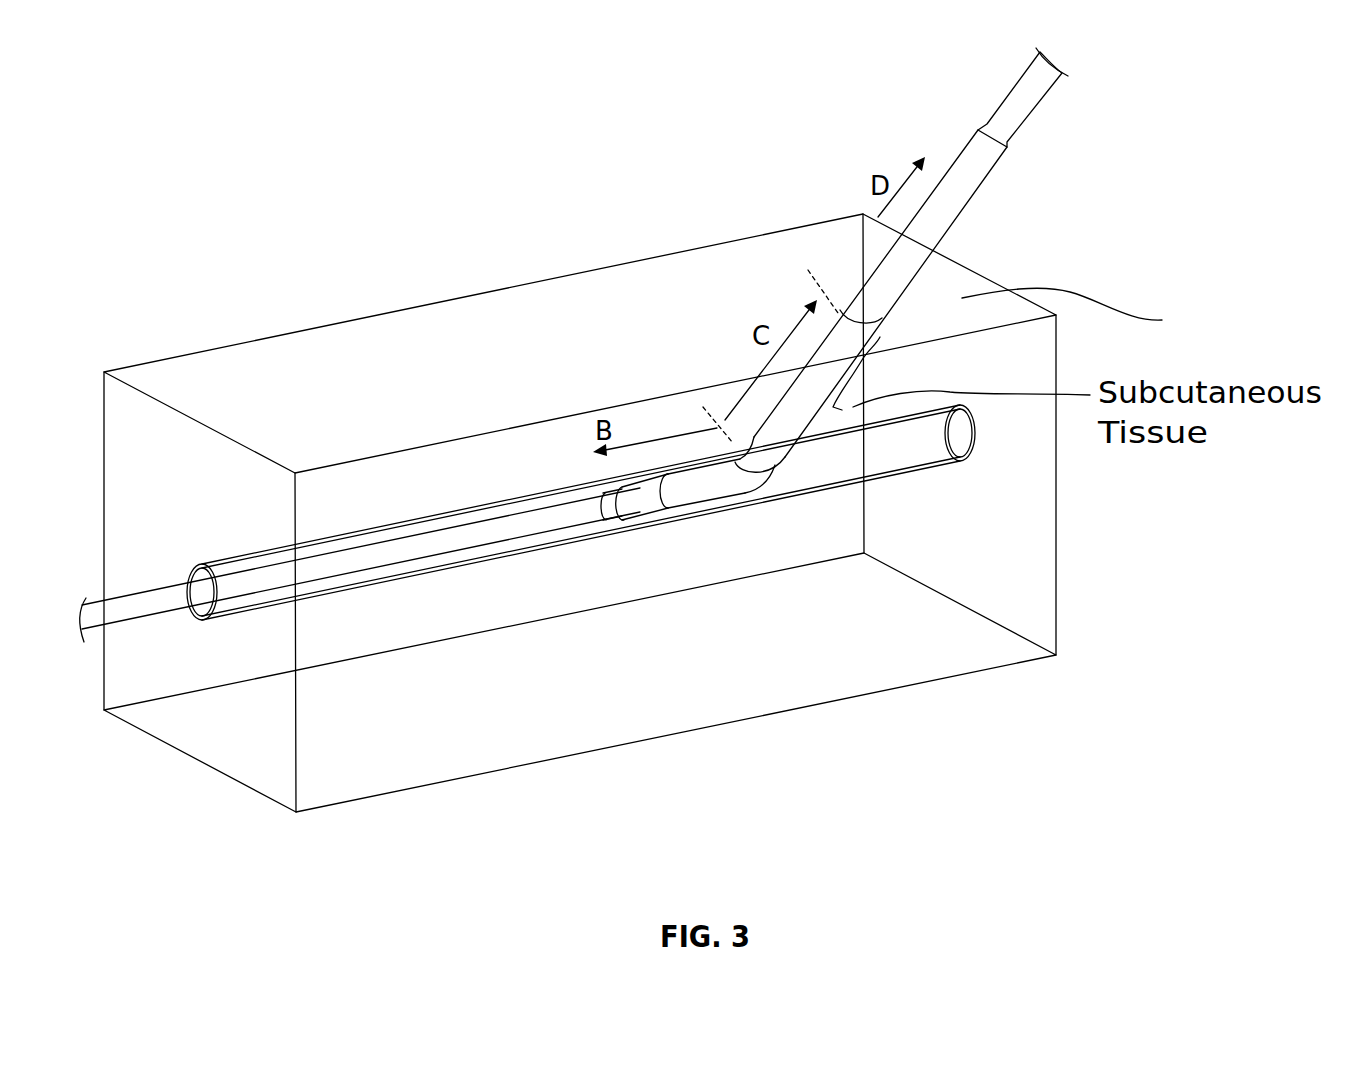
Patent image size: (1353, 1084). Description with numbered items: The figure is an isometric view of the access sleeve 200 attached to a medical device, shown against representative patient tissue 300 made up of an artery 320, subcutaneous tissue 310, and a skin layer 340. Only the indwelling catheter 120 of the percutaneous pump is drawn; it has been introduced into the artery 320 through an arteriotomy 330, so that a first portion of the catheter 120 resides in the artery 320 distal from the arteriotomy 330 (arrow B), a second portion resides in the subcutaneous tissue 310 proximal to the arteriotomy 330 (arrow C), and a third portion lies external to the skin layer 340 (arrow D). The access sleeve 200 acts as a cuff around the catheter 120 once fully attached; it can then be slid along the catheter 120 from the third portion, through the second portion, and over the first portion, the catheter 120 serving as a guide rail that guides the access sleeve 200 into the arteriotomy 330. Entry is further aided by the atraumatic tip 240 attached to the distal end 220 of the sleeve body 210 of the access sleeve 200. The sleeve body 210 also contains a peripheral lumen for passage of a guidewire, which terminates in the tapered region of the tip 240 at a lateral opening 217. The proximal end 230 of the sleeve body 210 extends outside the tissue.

The tissue block / subcutaneous tissue model 300 is at (347, 166).
The subcutaneous tissue 310 is at (378, 358).
The artery 320 is at (340, 530).
The indwelling catheter 120 is at (565, 512).
The sleeve body 210 is at (797, 400).
The catheter hub 230 is at (975, 140).
The distal end 220 is at (672, 490).
The atraumatic tip 240 is at (632, 505).
The lateral opening 217 is at (615, 490).
The arteriotomy 330 is at (750, 490).
The skin layer 340 is at (1091, 310).
The access sleeve 200 is at (1100, 194).